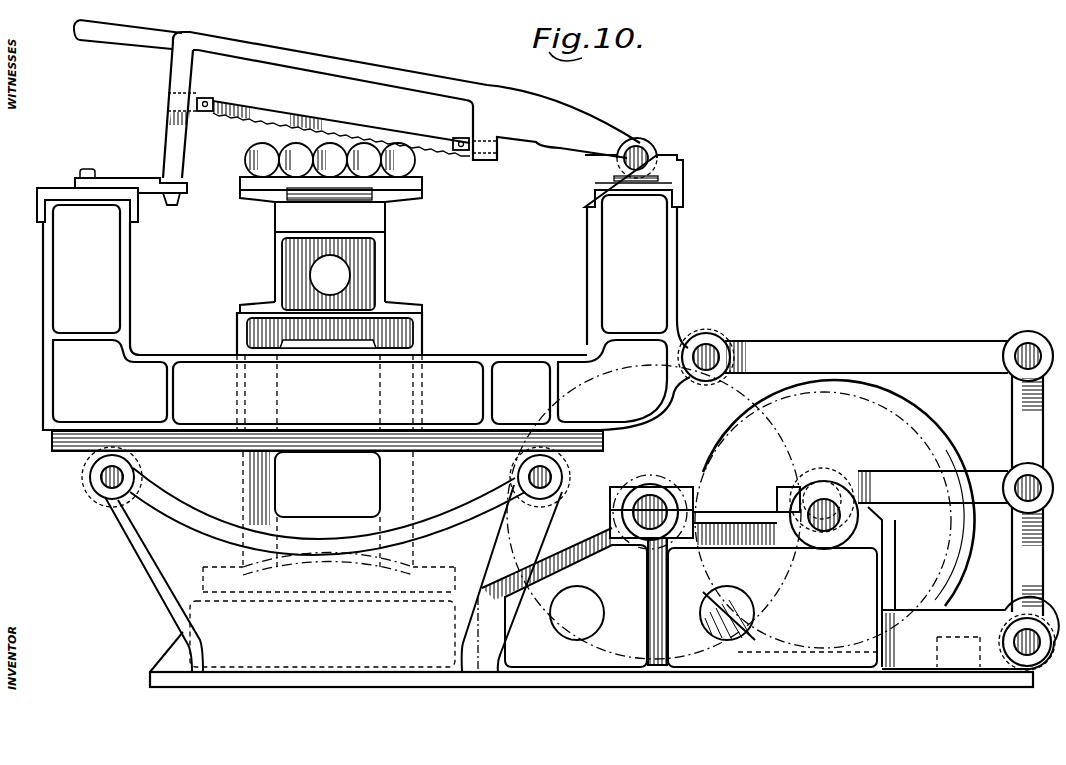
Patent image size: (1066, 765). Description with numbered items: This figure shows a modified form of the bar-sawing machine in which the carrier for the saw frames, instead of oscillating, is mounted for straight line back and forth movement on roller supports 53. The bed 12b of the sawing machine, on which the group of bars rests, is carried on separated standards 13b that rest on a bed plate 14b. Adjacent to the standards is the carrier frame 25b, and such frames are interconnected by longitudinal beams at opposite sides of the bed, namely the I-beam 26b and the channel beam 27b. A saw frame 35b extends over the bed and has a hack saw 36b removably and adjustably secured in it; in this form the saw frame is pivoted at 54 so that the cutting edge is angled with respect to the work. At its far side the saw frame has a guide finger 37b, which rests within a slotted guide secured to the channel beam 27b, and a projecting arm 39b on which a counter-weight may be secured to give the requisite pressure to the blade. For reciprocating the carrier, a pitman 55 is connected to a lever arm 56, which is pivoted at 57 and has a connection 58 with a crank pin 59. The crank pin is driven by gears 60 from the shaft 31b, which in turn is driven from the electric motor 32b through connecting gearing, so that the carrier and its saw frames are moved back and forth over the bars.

The bed 12b is at (342, 184).
The standards 13b is at (418, 339).
The bed plate 14b is at (585, 634).
The carrier frame 25b is at (505, 368).
The I-beam 26b is at (684, 182).
The channel beam 27b is at (60, 197).
The shaft 31b is at (656, 500).
The electric motor 32b is at (923, 422).
The saw frame 35b is at (313, 63).
The hack saw 36b is at (294, 108).
The guide finger 37b is at (172, 138).
The projecting arm 39b is at (143, 25).
The roller supports 53 is at (88, 477).
The pivot 54 is at (642, 152).
The pitman 55 is at (865, 357).
The lever arm 56 is at (1015, 411).
The pivot 57 is at (1034, 653).
The connection 58 is at (955, 539).
The crank pin 59 is at (824, 479).
The gears 60 is at (784, 399).